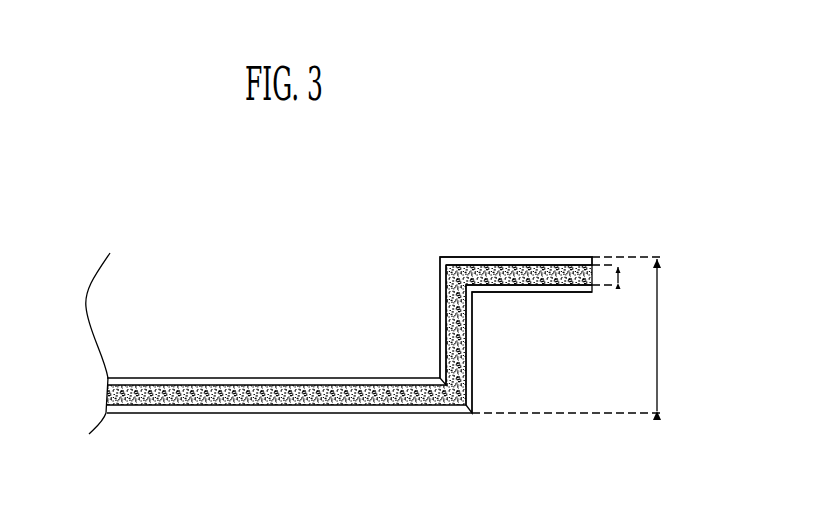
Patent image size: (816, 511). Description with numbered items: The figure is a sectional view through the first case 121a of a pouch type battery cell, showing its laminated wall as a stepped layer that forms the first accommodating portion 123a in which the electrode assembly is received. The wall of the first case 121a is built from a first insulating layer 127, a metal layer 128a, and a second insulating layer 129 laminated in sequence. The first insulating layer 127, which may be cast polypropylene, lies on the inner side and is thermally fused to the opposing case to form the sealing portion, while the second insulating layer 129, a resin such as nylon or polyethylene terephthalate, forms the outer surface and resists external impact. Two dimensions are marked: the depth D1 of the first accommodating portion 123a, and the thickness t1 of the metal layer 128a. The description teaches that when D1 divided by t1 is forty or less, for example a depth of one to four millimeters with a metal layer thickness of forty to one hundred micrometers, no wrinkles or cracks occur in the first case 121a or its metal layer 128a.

The first case 121a is at (86, 165).
The first accommodating portion 123a is at (249, 338).
The first insulating layer 127 is at (521, 262).
The metal layer 128a is at (577, 266).
The second insulating layer 129 is at (573, 292).
The depth of first accommodating portion D1 is at (669, 335).
The thickness of metal layer t1 is at (628, 277).